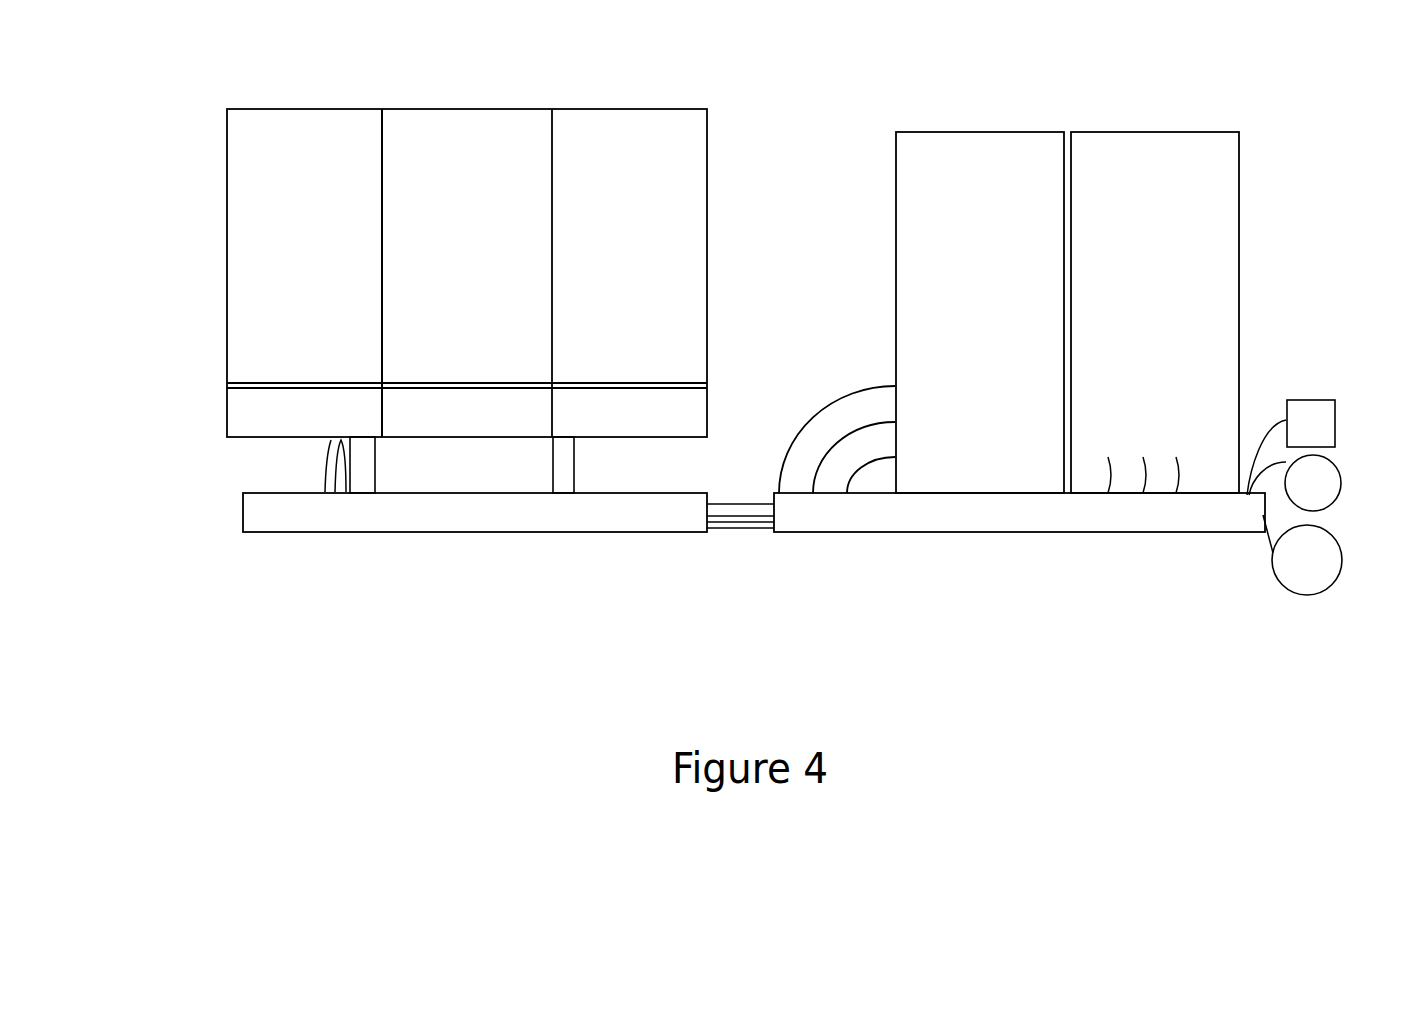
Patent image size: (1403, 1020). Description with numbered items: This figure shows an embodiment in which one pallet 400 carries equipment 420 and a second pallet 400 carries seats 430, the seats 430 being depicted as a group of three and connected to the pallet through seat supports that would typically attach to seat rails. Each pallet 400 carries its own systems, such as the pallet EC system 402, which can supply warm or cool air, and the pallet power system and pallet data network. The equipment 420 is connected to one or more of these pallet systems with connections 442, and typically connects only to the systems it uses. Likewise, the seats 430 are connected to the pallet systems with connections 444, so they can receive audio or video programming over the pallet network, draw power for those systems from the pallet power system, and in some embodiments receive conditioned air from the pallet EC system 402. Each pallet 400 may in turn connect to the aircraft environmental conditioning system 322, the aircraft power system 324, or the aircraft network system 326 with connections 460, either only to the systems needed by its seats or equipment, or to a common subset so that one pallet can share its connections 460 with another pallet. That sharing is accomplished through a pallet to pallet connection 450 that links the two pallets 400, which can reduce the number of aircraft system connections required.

The pallet 400 is at (970, 93).
The seats 430 is at (507, 257).
The equipment 420 is at (1005, 294).
The pallet EC system 402 is at (491, 524).
The connections 442 is at (811, 402).
The connections 444 is at (315, 500).
The pallet to pallet connection 450 is at (782, 550).
The connections 460 is at (1261, 541).
The environmental conditioning system 322 is at (1330, 587).
The power system 324 is at (1336, 507).
The network system 326 is at (1332, 439).